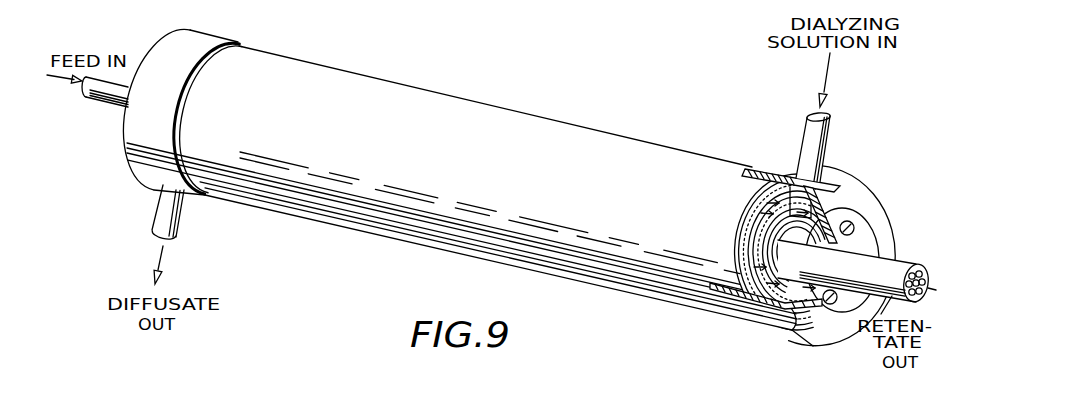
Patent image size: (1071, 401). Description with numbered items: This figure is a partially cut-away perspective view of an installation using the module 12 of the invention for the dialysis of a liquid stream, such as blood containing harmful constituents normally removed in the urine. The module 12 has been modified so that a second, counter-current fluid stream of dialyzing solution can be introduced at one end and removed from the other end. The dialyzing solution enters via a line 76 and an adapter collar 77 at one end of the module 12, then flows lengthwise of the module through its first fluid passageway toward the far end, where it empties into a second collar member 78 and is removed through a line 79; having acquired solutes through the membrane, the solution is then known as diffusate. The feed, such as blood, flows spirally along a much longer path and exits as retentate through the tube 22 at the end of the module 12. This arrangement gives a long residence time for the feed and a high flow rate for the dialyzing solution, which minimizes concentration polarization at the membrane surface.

The module 12 is at (528, 131).
The tube 22 is at (111, 106).
The line 76 is at (828, 143).
The adapter collar 77 is at (871, 198).
The second collar member 78 is at (232, 40).
The line 79 is at (183, 221).